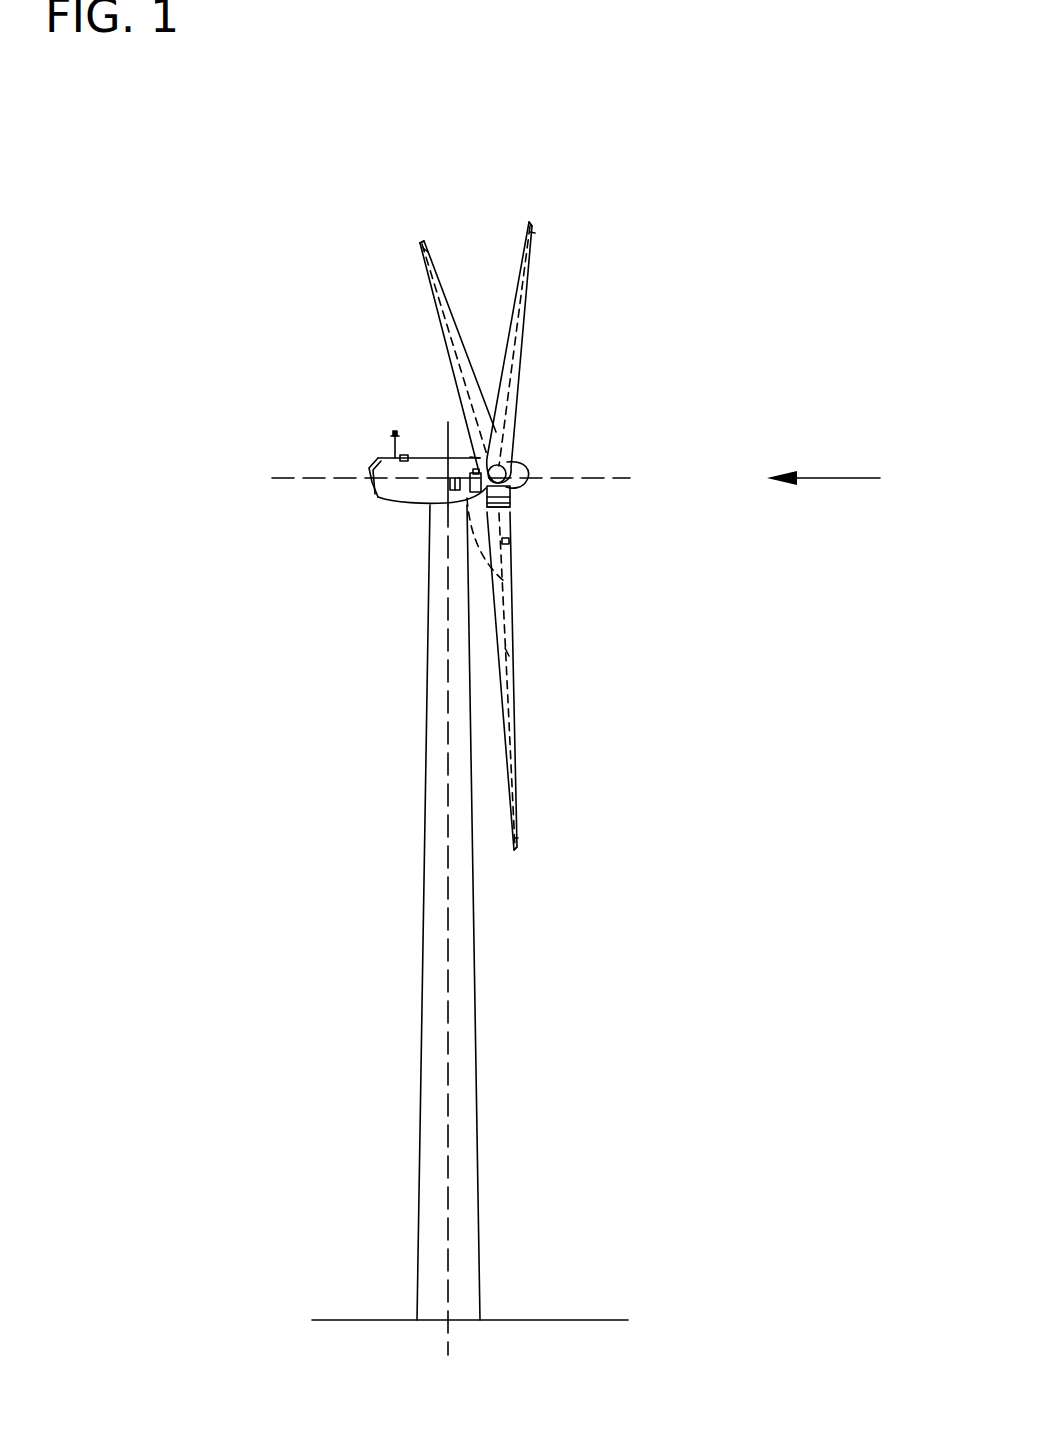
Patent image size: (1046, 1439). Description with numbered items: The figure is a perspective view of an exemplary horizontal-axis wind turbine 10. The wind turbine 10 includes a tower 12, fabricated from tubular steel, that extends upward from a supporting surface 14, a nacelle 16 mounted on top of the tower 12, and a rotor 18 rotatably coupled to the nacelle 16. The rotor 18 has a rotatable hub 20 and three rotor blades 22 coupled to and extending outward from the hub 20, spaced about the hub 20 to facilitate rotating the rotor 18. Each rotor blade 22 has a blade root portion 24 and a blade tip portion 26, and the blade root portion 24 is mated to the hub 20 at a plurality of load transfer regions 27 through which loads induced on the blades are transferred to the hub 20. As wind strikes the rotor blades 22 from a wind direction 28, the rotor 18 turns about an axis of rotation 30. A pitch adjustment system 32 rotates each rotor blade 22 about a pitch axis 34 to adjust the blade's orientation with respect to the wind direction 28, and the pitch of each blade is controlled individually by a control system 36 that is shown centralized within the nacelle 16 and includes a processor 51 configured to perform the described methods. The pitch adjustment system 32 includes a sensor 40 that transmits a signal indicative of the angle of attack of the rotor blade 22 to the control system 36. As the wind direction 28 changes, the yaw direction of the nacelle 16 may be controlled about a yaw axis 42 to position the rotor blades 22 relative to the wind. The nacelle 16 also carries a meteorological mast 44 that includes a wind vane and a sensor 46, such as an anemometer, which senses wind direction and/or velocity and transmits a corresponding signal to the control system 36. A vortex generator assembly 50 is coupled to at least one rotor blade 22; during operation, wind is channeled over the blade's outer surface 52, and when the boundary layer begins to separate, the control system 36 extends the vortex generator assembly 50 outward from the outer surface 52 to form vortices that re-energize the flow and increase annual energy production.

The wind turbine 10 is at (186, 240).
The tower 12 is at (422, 1078).
The supporting surface 14 is at (373, 1320).
The nacelle 16 is at (402, 503).
The rotor 18 is at (510, 538).
The rotatable hub 20 is at (522, 474).
The rotor blade 22 is at (440, 317).
The blade root portion 24 is at (517, 435).
The blade tip portion 26 is at (421, 242).
The load transfer regions 27 is at (503, 497).
The wind direction 28 is at (846, 478).
The axis of rotation 30 is at (597, 481).
The pitch adjustment system 32 is at (505, 583).
The pitch axis 34 is at (408, 250).
The control system 36 is at (450, 540).
The sensor 40 is at (472, 457).
The yaw axis 42 is at (450, 1012).
The meteorological mast 44 is at (398, 457).
The sensor 46 is at (393, 436).
The vortex generator assembly 50 is at (508, 546).
The processor 51 is at (446, 481).
The outer surface 52 is at (510, 652).